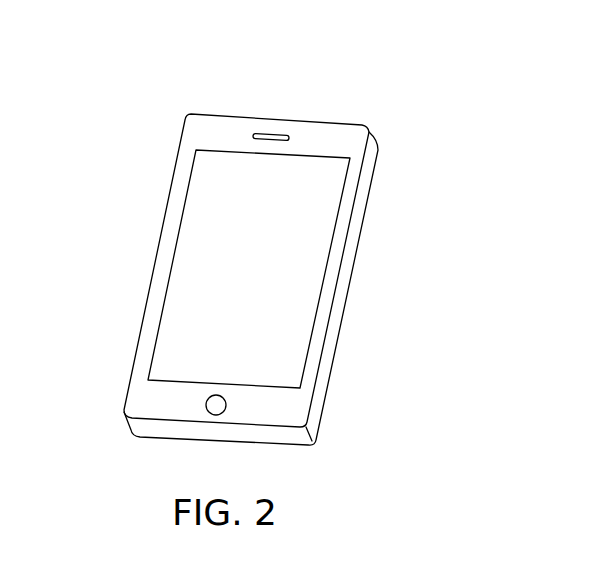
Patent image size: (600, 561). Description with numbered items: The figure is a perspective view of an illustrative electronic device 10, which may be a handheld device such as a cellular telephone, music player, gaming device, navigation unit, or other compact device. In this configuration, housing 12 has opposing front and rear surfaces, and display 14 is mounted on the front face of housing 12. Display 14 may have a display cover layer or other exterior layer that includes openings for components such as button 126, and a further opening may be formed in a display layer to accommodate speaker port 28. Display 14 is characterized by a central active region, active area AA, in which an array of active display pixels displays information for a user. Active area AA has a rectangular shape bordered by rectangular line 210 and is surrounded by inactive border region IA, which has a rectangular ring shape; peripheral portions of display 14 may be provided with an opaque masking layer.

The electronic device 10 is at (408, 71).
The housing 12 is at (362, 235).
The display 14 is at (295, 280).
The speaker port 28 is at (268, 136).
The button 126 is at (207, 414).
The rectangular line 210 is at (163, 302).
The active area AA is at (215, 180).
The inactive border region IA is at (170, 237).